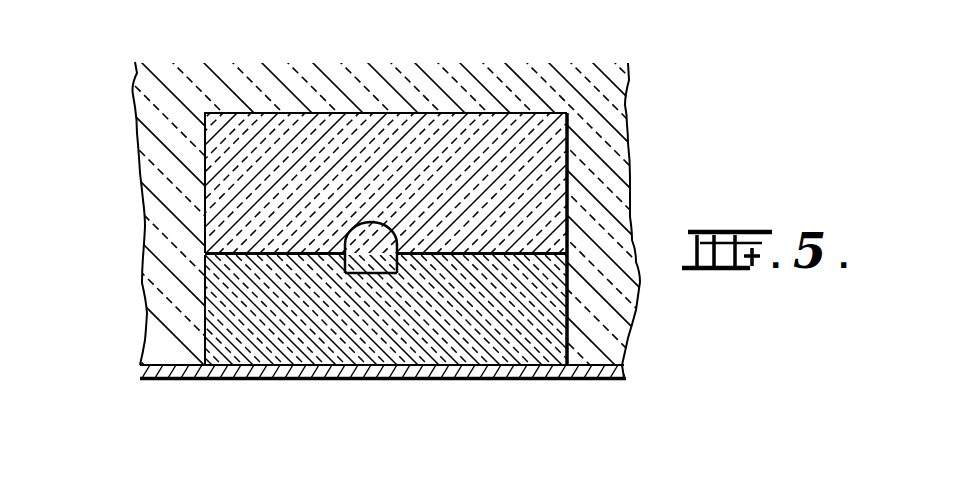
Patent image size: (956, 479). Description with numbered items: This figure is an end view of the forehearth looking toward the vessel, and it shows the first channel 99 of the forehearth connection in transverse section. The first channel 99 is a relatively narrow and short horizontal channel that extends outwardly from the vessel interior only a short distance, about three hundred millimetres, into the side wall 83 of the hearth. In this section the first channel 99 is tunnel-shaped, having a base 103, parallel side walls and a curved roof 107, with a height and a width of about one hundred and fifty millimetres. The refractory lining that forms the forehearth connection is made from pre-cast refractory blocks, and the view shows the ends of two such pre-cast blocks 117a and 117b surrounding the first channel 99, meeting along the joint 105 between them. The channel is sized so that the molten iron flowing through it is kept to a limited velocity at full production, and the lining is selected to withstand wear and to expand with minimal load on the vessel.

The side wall 83 is at (475, 147).
The pre-cast block 117a is at (267, 148).
The pre-cast block 117b is at (512, 320).
The parting line between ring halves 105 is at (345, 262).
The first channel 99 is at (362, 240).
The curved roof 107 is at (382, 233).
The base 103 is at (354, 274).